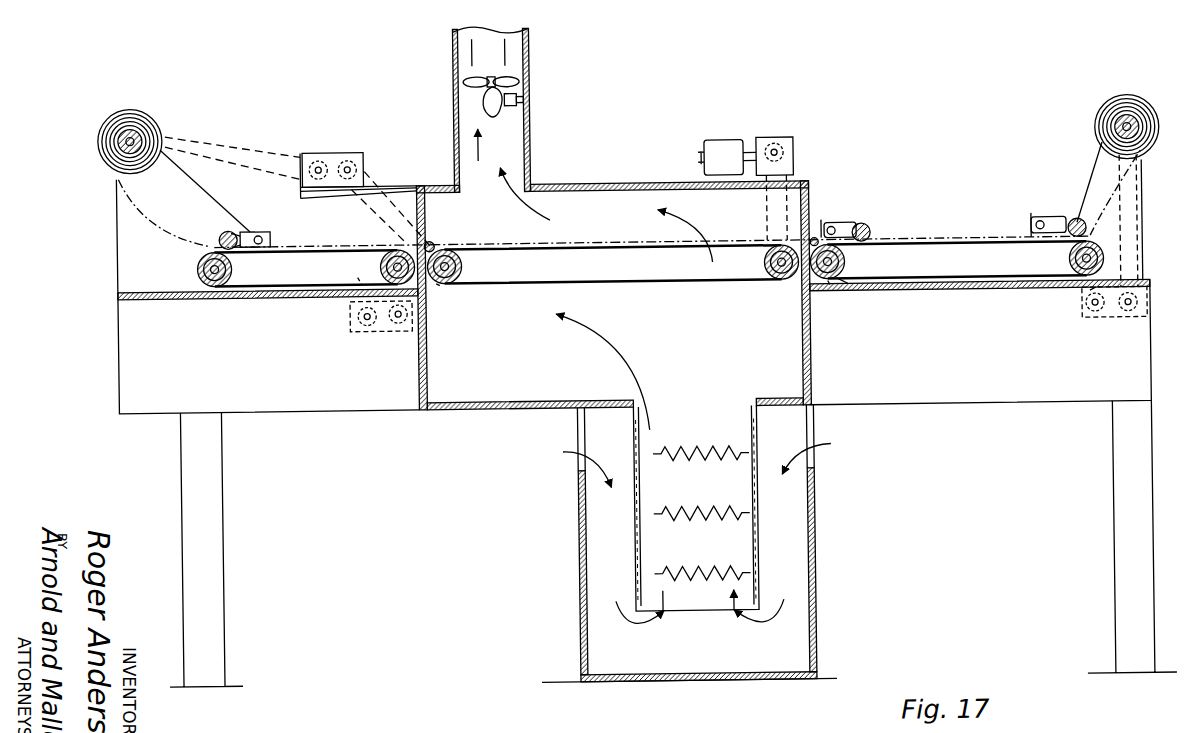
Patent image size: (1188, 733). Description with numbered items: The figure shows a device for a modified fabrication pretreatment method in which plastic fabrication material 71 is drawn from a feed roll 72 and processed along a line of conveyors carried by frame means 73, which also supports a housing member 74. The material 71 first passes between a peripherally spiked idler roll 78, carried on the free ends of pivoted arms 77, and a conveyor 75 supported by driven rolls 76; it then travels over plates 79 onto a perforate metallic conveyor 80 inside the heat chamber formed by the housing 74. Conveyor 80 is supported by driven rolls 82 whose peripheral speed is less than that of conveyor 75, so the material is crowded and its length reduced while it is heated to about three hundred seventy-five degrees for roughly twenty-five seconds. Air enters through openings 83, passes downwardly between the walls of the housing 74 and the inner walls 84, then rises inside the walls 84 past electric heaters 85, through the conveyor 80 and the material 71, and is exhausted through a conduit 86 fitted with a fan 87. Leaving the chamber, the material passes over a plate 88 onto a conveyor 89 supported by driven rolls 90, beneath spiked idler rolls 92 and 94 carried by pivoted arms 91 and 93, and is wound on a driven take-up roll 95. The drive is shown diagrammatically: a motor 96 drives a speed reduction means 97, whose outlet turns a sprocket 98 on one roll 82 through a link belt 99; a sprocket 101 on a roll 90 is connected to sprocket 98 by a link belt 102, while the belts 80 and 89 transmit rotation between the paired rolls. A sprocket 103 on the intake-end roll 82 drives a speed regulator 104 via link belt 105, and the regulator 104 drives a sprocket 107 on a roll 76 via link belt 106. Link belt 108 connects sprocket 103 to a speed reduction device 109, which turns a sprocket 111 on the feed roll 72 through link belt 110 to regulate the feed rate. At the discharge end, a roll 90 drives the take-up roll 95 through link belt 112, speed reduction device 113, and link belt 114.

The plastic fabrication material 71 is at (153, 215).
The feed roll 72 is at (132, 104).
The frame means 73 is at (219, 435).
The housing member 74 is at (427, 365).
The conveyor 75 is at (308, 248).
The driven roll 76 is at (235, 267).
The pivoted arms 77 is at (263, 227).
The peripherally spiked roll 78 is at (234, 227).
The plates 79 is at (433, 248).
The conveyor 80 is at (587, 249).
The driven roll 82 is at (459, 248).
The openings 83 is at (576, 427).
The inner walls 84 is at (630, 530).
The electric heaters 85 is at (701, 461).
The conduit 86 is at (457, 136).
The fan 87 is at (470, 93).
The plate 88 is at (821, 242).
The conveyor 89 is at (935, 282).
The driven rolls 90 is at (846, 267).
The pivoted arm 91 is at (844, 225).
The peripherally spiked roll 92 is at (869, 231).
The pivoted arm 93 is at (1047, 222).
The peripherally spiked roll 94 is at (1077, 228).
The driven take-up roll 95 is at (1121, 102).
The motor 96 is at (728, 143).
The speed reduction means 97 is at (793, 141).
The sprocket 98 is at (780, 284).
The link belt 99 is at (767, 202).
The sprocket 101 is at (848, 286).
The link belt 102 is at (830, 287).
The sprocket 103 is at (463, 268).
The speed regulator 104 is at (385, 326).
The link belt 105 is at (440, 283).
The link belt 106 is at (358, 274).
The sprocket 107 is at (397, 239).
The link belt 108 is at (381, 215).
The speed reduction device 109 is at (340, 152).
The link belt 110 is at (245, 145).
The sprocket 111 is at (165, 120).
The link belt 112 is at (1090, 296).
The speed reduction device 113 is at (1112, 326).
The link belt 114 is at (1144, 217).